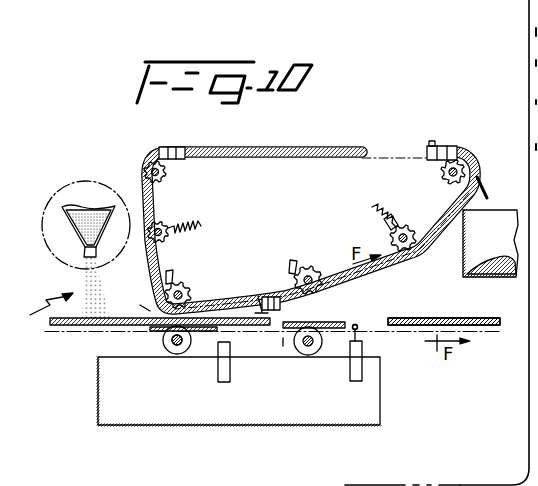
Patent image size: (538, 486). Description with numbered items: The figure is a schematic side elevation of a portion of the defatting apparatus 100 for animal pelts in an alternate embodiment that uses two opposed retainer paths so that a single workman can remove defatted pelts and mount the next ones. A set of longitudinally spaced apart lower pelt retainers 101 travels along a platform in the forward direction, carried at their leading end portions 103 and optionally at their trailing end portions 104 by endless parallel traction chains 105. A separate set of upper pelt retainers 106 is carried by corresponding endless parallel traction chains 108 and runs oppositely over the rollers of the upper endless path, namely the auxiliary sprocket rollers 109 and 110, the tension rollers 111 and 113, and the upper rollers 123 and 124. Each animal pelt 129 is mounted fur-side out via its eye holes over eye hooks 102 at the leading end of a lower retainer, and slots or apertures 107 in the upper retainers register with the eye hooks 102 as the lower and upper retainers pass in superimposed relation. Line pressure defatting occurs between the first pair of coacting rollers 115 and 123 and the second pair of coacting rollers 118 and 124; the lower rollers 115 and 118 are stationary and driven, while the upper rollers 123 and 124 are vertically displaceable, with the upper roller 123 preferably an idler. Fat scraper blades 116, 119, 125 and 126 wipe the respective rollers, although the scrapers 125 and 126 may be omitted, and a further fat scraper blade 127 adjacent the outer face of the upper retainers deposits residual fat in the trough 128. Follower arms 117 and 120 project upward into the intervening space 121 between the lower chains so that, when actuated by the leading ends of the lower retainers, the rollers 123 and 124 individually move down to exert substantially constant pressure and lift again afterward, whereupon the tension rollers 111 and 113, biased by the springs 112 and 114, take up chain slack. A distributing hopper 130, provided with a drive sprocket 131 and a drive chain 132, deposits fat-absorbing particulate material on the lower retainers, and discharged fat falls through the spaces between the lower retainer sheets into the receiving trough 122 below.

The defatting apparatus 100 is at (44, 311).
The lower pelt retainers 101 is at (95, 328).
The eye hooks 102 is at (258, 308).
The leading end portions 103 is at (263, 314).
The trailing end portions 104 is at (393, 318).
The endless parallel traction chains 105 is at (352, 348).
The upper pelt retainers 106 is at (297, 148).
The slots or apertures 107 is at (182, 152).
The endless parallel traction chains 108 is at (355, 158).
The auxiliary sprocket roller 109 is at (166, 174).
The auxiliary sprocket roller 110 is at (468, 174).
The tension roller 111 is at (167, 222).
The spring 112 is at (203, 226).
The tension roller 113 is at (426, 248).
The spring 114 is at (376, 206).
The lower roller 115 is at (177, 348).
The fat scraper blade 116 is at (157, 347).
The follower arm 117 is at (224, 379).
The lower roller 118 is at (307, 350).
The fat scraper blade 119 is at (283, 345).
The follower arm 120 is at (360, 332).
The intervening space 121 is at (315, 326).
The receiving trough 122 is at (97, 394).
The upper roller 123 is at (191, 289).
The upper roller 124 is at (314, 267).
The fat scraper blade 125 is at (172, 277).
The fat scraper blade 126 is at (294, 262).
The fat scraper blade 127 is at (484, 190).
The trough 128 is at (490, 278).
The animal pelt 129 is at (144, 310).
The distributing hopper 130 is at (78, 212).
The drive sprocket 131 is at (69, 179).
The drive chain 132 is at (106, 310).